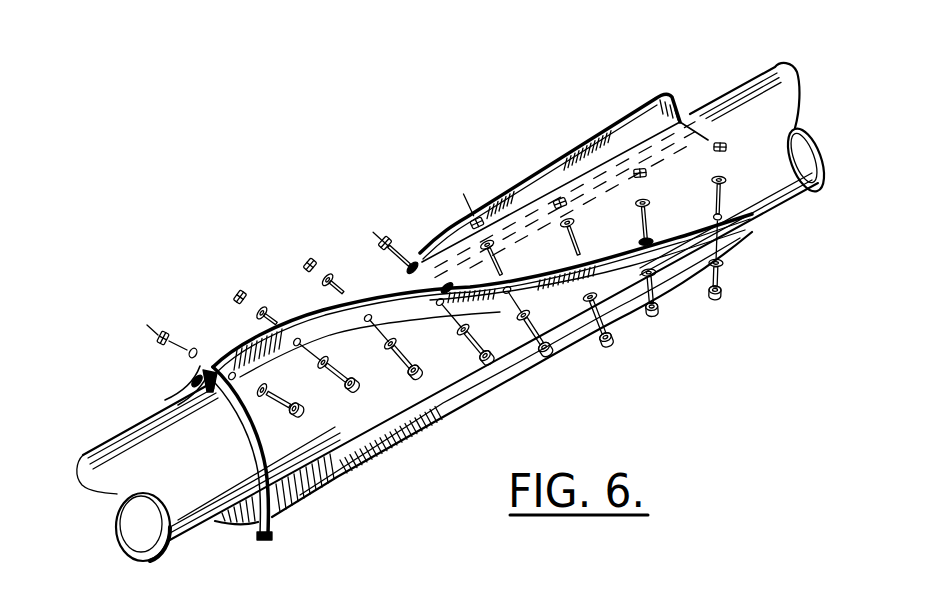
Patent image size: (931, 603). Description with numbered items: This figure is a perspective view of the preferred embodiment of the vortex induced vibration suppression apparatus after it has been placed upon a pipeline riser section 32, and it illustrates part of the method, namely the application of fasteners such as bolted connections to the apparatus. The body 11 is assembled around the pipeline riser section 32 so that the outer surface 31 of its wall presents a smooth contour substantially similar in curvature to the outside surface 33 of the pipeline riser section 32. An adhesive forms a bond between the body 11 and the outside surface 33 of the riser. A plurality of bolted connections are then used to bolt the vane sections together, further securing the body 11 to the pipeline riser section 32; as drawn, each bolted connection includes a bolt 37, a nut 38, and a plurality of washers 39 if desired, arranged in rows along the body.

The body 11 is at (583, 128).
The outer surface 31 is at (337, 403).
The pipeline riser section 32 is at (773, 68).
The outside surface 33 is at (175, 446).
The bolt 37 is at (283, 388).
The nut 38 is at (157, 340).
The washers 39 is at (193, 350).